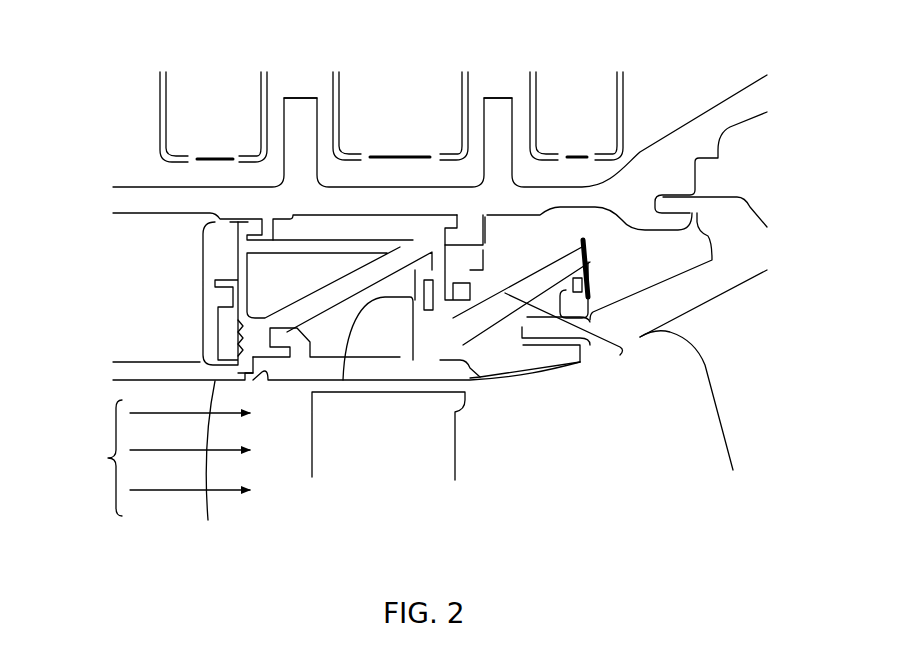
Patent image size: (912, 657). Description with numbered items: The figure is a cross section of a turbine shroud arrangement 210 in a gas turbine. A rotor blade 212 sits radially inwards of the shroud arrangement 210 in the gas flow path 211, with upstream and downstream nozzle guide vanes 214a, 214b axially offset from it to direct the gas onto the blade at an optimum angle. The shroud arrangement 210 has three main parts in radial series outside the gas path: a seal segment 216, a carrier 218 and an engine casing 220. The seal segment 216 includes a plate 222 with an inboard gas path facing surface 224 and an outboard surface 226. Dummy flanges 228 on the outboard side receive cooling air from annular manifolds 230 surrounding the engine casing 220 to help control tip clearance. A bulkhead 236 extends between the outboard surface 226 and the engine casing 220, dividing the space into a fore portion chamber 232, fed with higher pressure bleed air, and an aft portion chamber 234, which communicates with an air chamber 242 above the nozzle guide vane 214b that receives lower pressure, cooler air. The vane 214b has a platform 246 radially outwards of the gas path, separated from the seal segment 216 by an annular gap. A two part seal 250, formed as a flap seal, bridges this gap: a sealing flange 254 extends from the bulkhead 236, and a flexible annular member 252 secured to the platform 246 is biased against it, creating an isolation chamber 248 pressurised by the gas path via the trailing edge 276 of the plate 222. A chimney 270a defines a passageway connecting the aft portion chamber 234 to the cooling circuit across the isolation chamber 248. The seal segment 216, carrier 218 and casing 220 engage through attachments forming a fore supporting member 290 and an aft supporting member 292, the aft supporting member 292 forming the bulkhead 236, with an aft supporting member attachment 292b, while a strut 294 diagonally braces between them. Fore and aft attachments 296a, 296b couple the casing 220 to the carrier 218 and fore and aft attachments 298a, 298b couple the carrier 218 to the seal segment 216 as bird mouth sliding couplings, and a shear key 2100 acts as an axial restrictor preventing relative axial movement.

The shear key 2100 is at (436, 285).
The shroud arrangement 210 is at (152, 258).
The gas flow path 211 is at (108, 464).
The turbine rotor blade 212 is at (406, 424).
The nozzle guide vane 214a is at (178, 508).
The nozzle guide vane 214b is at (774, 364).
The seal segment 216 is at (503, 379).
The carrier 218 is at (233, 297).
The engine casing 220 is at (170, 198).
The plate 222 is at (458, 298).
The inboard gas path facing surface 224 is at (287, 380).
The outboard surface 226 is at (374, 352).
The dummy flange 228 is at (300, 110).
The annular manifold 230 is at (236, 129).
The fore portion chamber 232 is at (313, 286).
The aft portion chamber 234 is at (582, 246).
The bulkhead 236 is at (426, 372).
The air chamber 242 is at (680, 271).
The platform 246 is at (603, 352).
The isolation chamber 248 is at (490, 330).
The two part seal 250 is at (601, 252).
The flexible annular member 252 is at (717, 311).
The sealing flange 254 is at (527, 283).
The chimney 270a is at (620, 348).
The trailing edge 276 is at (582, 359).
The fore supporting member 290 is at (205, 298).
The aft supporting member 292 is at (350, 393).
The aft supporting member attachment 292b is at (476, 225).
The strut 294 is at (341, 285).
The fore attachment 296a is at (247, 222).
The aft attachment 296b is at (450, 253).
The fore attachment 298a is at (280, 352).
The aft attachment 298b is at (470, 380).